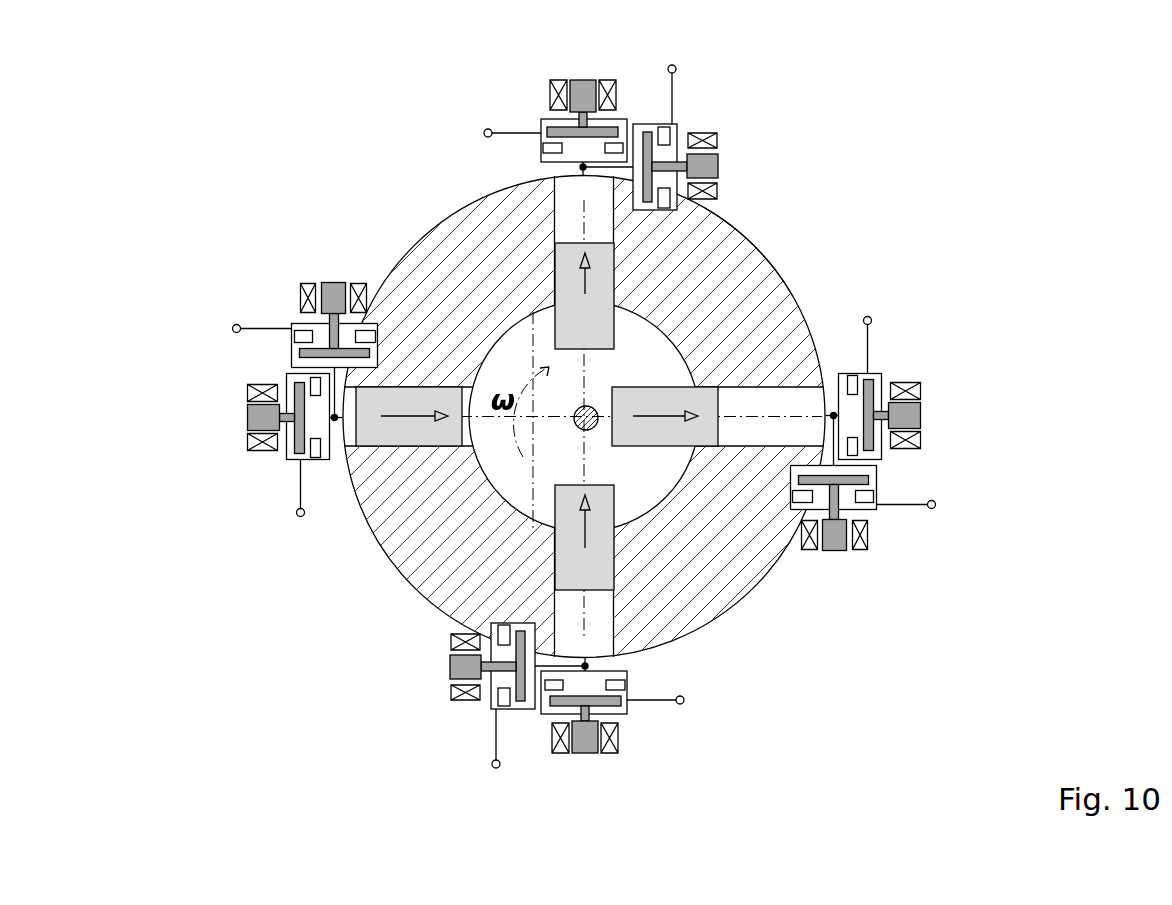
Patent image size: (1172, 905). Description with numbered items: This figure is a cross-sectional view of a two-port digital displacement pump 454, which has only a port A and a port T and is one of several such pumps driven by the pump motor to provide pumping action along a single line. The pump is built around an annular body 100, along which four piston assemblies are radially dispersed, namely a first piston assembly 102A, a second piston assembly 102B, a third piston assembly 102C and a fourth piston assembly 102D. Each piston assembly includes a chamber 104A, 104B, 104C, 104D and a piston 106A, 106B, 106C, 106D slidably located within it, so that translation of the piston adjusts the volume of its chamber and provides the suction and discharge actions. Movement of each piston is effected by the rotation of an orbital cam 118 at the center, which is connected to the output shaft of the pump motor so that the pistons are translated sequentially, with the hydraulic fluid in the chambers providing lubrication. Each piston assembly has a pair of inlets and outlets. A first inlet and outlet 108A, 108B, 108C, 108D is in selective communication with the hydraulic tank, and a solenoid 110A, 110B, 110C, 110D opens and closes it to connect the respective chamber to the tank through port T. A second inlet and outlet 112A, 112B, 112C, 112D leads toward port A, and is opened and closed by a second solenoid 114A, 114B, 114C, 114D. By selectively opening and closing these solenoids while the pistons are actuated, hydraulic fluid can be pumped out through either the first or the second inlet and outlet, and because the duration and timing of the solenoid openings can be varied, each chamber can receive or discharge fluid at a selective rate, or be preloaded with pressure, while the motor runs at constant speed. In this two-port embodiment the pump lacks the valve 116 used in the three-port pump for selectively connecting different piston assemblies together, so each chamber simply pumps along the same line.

The annular body 100 is at (412, 574).
The first piston assembly 102A is at (526, 793).
The second piston assembly 102B is at (169, 296).
The third piston assembly 102C is at (554, 58).
The fourth piston assembly 102D is at (984, 395).
The chamber 104A is at (561, 644).
The chamber 104B is at (343, 447).
The chamber 104C is at (559, 208).
The chamber 104D is at (757, 431).
The piston 106A is at (551, 571).
The piston 106B is at (378, 436).
The piston 106C is at (559, 319).
The piston 106D is at (639, 431).
The first inlet and outlet 108A is at (495, 743).
The first inlet and outlet 108B is at (250, 327).
The first inlet and outlet 108C is at (672, 97).
The first inlet and outlet 108D is at (910, 510).
The solenoid 110A is at (450, 667).
The solenoid 110B is at (334, 283).
The solenoid 110C is at (720, 165).
The solenoid 110D is at (831, 551).
The second inlet and outlet 112A is at (632, 705).
The second inlet and outlet 112B is at (299, 505).
The second inlet and outlet 112C is at (490, 130).
The second inlet and outlet 112D is at (868, 343).
The solenoid 114A is at (587, 754).
The solenoid 114B is at (248, 424).
The solenoid 114C is at (586, 80).
The solenoid 114D is at (921, 421).
The valve 116 is at (835, 248).
The orbital cam 118 is at (574, 422).
The digital displacement pump 454 is at (168, 711).